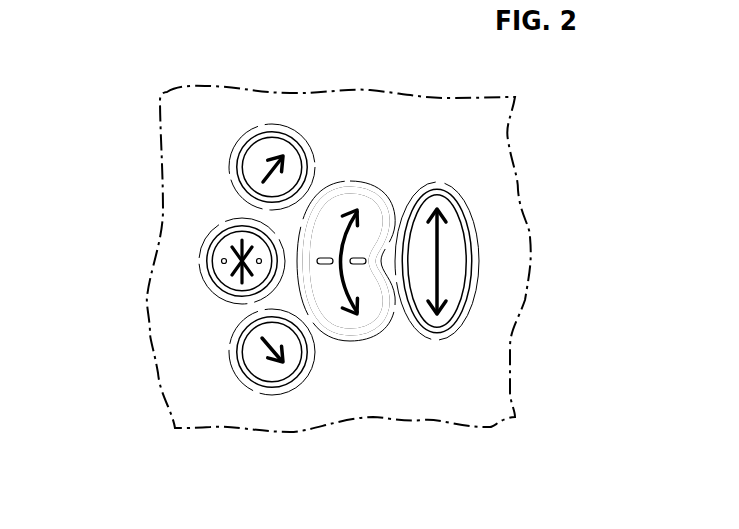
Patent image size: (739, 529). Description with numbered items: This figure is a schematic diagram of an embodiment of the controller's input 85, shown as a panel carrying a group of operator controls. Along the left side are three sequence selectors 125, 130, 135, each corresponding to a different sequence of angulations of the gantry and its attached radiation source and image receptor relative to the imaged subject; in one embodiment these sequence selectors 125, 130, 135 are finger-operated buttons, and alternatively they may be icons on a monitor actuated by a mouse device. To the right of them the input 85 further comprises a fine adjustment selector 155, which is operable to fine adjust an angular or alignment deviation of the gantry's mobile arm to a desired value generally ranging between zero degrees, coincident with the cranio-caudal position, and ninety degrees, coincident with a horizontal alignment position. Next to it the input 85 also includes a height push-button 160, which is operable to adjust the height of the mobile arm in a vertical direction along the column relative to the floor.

The input 85 is at (556, 310).
The sequence selector 125 is at (250, 169).
The sequence selector 130 is at (213, 262).
The sequence selector 135 is at (250, 352).
The fine adjustment selector 155 is at (362, 203).
The height push-button 160 is at (460, 263).